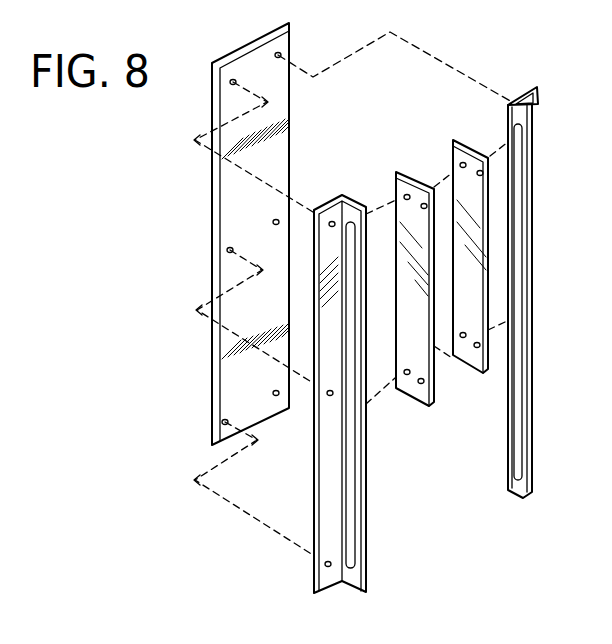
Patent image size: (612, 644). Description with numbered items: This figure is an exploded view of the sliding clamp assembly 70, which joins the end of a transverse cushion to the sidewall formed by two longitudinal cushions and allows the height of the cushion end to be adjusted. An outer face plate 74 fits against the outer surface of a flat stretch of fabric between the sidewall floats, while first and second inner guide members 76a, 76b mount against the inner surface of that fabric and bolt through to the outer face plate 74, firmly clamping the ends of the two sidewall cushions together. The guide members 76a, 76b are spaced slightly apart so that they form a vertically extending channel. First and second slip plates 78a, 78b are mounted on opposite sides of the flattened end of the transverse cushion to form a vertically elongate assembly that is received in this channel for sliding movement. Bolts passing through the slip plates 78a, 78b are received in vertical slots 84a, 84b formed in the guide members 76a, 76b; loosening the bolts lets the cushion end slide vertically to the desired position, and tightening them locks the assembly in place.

The sliding clamp assembly 70 is at (471, 66).
The outer face plate 74 is at (216, 192).
The first inner guide member 76a is at (396, 394).
The second inner guide member 76b is at (466, 292).
The first slip plate 78a is at (398, 187).
The second slip plate 78b is at (452, 152).
The vertical slot 84a is at (352, 517).
The vertical slot 84b is at (513, 408).